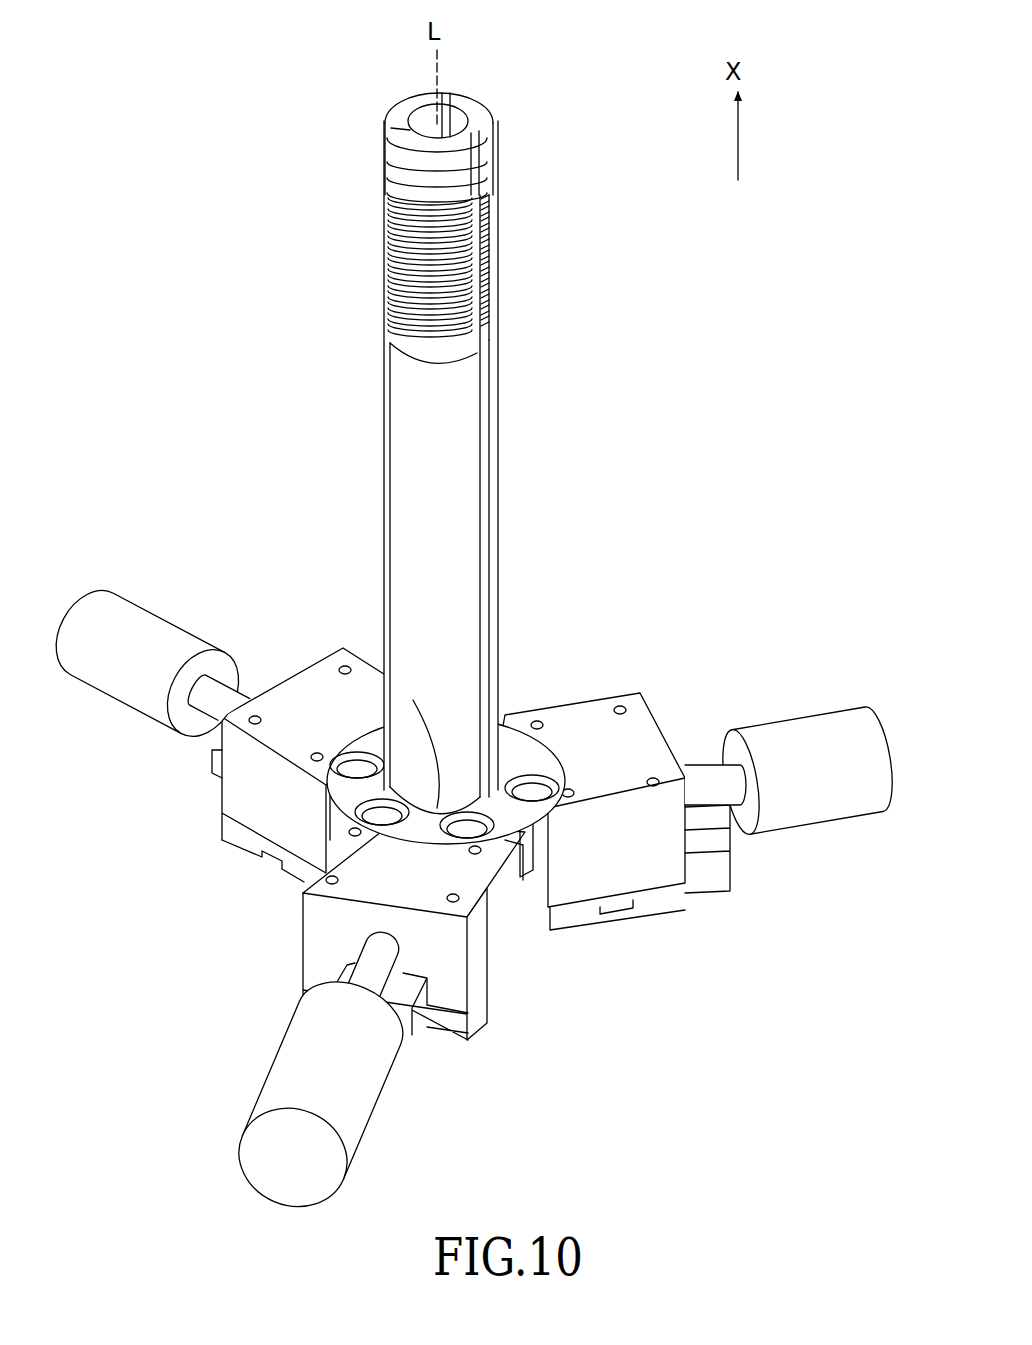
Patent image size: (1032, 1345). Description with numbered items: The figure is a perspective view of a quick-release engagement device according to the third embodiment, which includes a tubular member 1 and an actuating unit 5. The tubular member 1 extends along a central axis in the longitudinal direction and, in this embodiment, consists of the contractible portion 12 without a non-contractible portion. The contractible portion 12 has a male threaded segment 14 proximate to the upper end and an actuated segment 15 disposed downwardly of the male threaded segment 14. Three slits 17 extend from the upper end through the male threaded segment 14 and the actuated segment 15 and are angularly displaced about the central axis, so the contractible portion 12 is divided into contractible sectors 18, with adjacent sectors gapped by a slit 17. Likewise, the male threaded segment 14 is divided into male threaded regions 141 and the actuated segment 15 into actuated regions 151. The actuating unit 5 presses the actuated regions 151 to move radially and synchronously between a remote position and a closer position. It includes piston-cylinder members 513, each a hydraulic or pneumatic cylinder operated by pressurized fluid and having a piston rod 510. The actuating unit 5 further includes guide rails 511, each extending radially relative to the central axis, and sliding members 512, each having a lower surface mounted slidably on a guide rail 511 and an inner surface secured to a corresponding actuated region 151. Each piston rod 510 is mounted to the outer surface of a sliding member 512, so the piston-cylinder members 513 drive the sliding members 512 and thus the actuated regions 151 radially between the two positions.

The tubular member 1 is at (399, 90).
The actuating unit 5 is at (549, 666).
The contractible portion 12 is at (503, 418).
The male threaded segment 14 is at (378, 261).
The actuated segment 15 is at (497, 778).
The slit 17 is at (452, 96).
The contractible sector 18 is at (425, 510).
The male threaded region 141 is at (456, 232).
The actuated region 151 is at (437, 808).
The piston rod 510 is at (728, 790).
The guide rail 511 is at (243, 847).
The sliding member 512 is at (305, 683).
The piston-cylinder member 513 is at (793, 735).